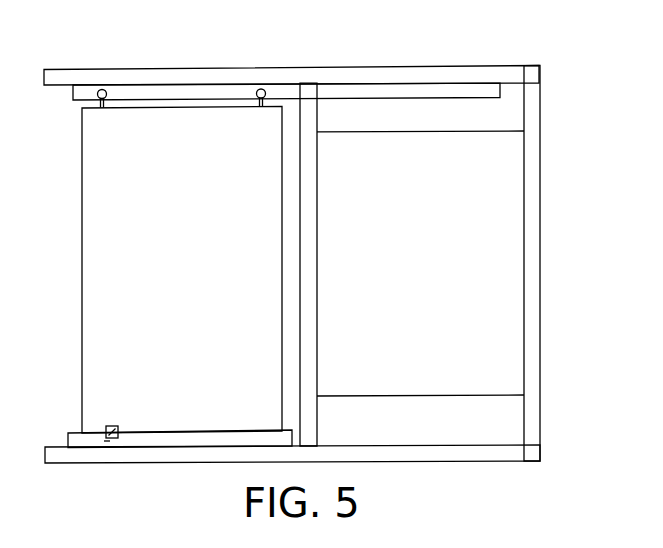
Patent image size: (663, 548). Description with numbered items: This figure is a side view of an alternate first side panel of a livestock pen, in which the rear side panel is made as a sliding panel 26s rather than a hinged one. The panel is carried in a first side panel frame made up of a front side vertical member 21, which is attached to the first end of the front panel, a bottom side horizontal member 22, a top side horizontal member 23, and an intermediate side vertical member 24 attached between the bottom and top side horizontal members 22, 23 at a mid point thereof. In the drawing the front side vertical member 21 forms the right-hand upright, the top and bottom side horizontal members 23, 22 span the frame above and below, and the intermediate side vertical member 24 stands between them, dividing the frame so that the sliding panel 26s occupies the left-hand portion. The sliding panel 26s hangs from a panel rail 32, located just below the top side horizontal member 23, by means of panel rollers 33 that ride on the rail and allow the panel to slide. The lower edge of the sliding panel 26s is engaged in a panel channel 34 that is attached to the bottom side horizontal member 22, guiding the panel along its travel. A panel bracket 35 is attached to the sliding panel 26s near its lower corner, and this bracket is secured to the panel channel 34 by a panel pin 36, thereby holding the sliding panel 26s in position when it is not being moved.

The front side vertical member 21 is at (541, 382).
The bottom side horizontal member 22 is at (418, 463).
The top side horizontal member 23 is at (428, 67).
The intermediate side vertical member 24 is at (317, 421).
The sliding panel 26s is at (81, 184).
The panel rail 32 is at (73, 93).
The panel rollers 33 is at (102, 89).
The panel channel 34 is at (68, 437).
The panel bracket 35 is at (118, 427).
The panel pin 36 is at (104, 441).